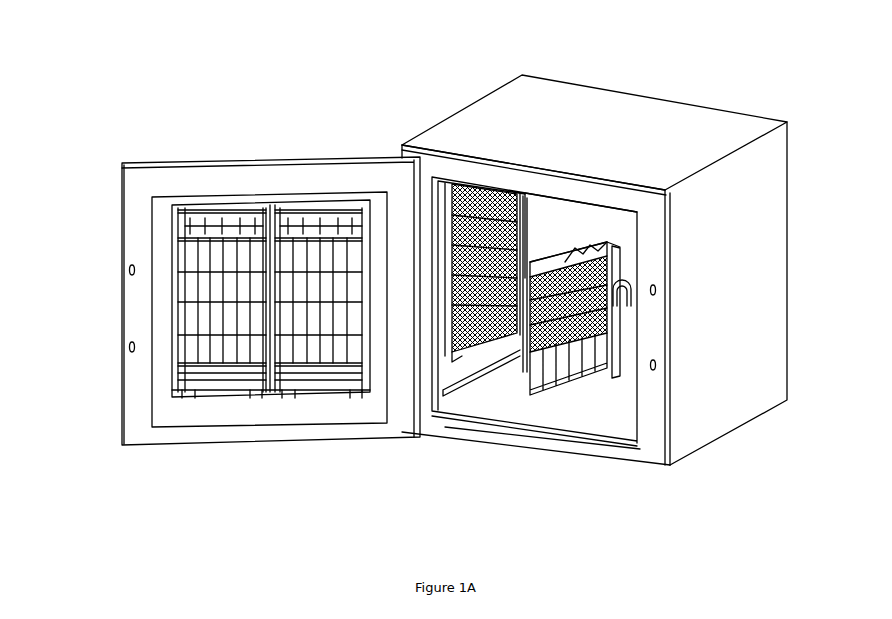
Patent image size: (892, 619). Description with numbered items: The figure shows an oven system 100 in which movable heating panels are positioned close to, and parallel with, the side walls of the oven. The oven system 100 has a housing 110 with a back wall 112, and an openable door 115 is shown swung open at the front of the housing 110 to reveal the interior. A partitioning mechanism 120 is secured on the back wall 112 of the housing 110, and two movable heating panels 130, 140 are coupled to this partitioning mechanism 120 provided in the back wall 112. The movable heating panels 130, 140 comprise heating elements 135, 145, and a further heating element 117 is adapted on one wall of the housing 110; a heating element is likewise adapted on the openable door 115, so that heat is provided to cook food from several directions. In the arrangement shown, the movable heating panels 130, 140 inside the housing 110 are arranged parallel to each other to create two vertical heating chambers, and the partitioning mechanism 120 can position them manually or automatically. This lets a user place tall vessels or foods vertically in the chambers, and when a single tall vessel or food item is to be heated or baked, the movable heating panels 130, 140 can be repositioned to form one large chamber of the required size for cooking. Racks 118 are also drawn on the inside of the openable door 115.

The oven system 100 is at (275, 102).
The housing 110 is at (591, 138).
The back wall 112 is at (581, 235).
The openable door 115 is at (130, 312).
The heating element 117 is at (470, 330).
The door storage racks 118 is at (243, 347).
The partitioning mechanism 120 is at (628, 302).
The movable heating panel 130 is at (523, 328).
The heating element 135 is at (577, 267).
The movable heating panel 140 is at (545, 347).
The heating element 145 is at (583, 318).